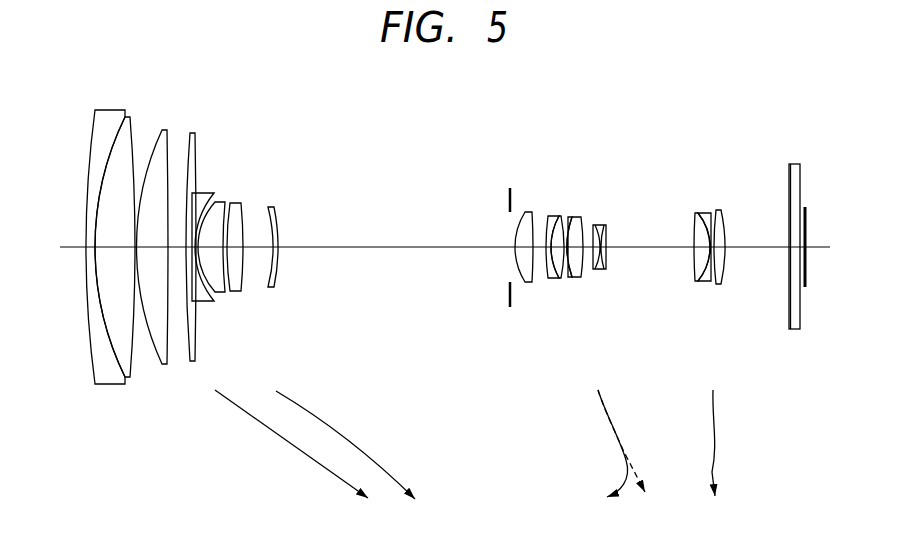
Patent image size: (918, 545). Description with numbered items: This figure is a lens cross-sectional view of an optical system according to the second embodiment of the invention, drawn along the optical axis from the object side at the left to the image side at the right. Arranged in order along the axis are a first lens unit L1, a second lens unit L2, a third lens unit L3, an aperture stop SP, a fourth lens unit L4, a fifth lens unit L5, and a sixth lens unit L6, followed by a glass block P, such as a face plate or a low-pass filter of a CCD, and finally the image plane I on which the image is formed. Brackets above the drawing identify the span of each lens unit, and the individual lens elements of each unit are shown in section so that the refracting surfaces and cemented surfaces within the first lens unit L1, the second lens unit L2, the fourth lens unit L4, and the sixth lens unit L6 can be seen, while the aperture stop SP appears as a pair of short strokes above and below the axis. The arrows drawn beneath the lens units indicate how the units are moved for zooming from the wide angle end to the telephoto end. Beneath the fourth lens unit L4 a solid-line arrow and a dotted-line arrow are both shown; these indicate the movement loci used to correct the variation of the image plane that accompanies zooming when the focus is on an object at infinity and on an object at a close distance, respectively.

The first lens unit L1 is at (189, 103).
The second lens unit L2 is at (243, 103).
The third lens unit L3 is at (280, 103).
The fourth lens unit L4 is at (582, 103).
The fifth lens unit L5 is at (607, 103).
The sixth lens unit L6 is at (730, 103).
The aperture stop SP is at (509, 307).
The glass block P is at (801, 103).
The image plane I is at (806, 207).